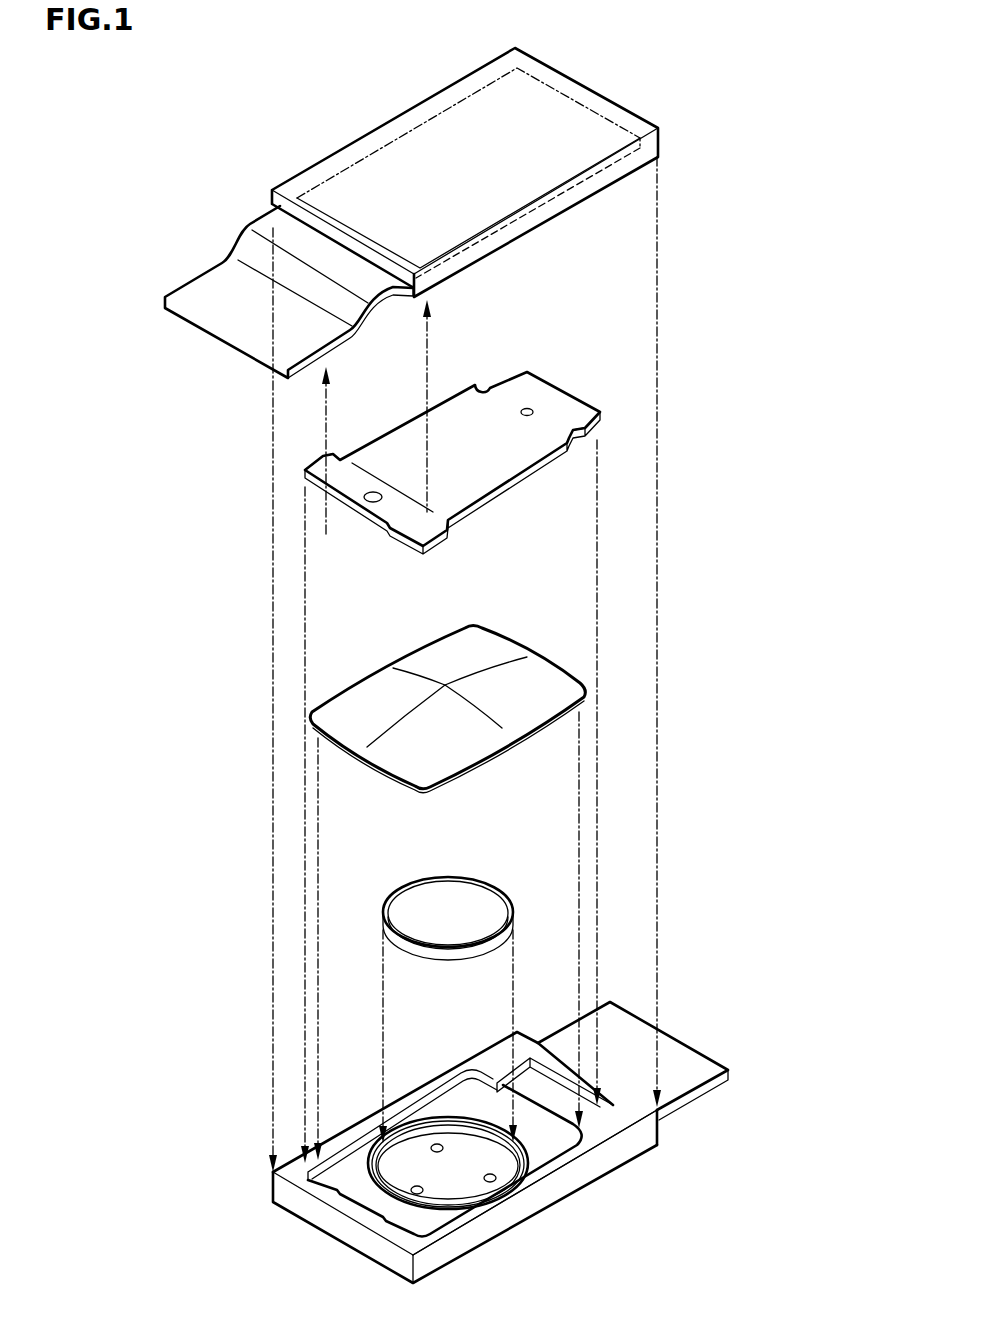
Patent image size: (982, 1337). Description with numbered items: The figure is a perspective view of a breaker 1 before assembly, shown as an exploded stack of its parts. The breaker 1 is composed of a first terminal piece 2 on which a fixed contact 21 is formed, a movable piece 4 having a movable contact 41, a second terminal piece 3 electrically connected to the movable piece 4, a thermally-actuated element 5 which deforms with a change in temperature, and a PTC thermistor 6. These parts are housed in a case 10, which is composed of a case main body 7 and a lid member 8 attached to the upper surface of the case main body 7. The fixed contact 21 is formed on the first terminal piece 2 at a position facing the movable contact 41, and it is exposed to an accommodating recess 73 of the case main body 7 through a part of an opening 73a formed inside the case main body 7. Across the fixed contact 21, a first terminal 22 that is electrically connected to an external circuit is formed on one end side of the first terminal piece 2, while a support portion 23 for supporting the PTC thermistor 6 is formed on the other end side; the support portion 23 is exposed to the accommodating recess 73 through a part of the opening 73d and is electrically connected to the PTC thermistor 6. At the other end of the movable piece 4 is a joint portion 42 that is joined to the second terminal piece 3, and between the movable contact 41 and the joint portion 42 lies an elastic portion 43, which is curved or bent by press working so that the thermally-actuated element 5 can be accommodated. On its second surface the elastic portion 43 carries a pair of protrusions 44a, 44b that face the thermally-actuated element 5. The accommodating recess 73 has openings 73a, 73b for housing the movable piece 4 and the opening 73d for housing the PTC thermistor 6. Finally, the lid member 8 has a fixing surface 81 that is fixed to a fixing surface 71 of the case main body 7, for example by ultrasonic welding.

The breaker 1 is at (667, 83).
The first terminal piece 2 is at (685, 1067).
The second terminal piece 3 is at (213, 290).
The movable piece 4 is at (470, 415).
The thermally-actuated element 5 is at (477, 647).
The PTC thermistor 6 is at (457, 900).
The case main body 7 is at (542, 1193).
The lid member 8 is at (425, 108).
The case 10 is at (245, 1203).
The fixed contact 21 is at (538, 1088).
The first terminal 22 is at (628, 1040).
The support portion 23 is at (440, 1182).
The movable contact 41 is at (595, 433).
The joint portion 42 is at (355, 489).
The elastic portion 43 is at (497, 455).
The protrusion (contact portion) 44a is at (370, 498).
The protrusion (contact portion) 44b is at (528, 410).
The fixing surface 71 is at (608, 1127).
The accommodating recess 73 is at (479, 1096).
The opening 73a is at (565, 1092).
The opening 73b is at (352, 1166).
The opening 73d is at (426, 1153).
The fixing surface 81 is at (613, 170).